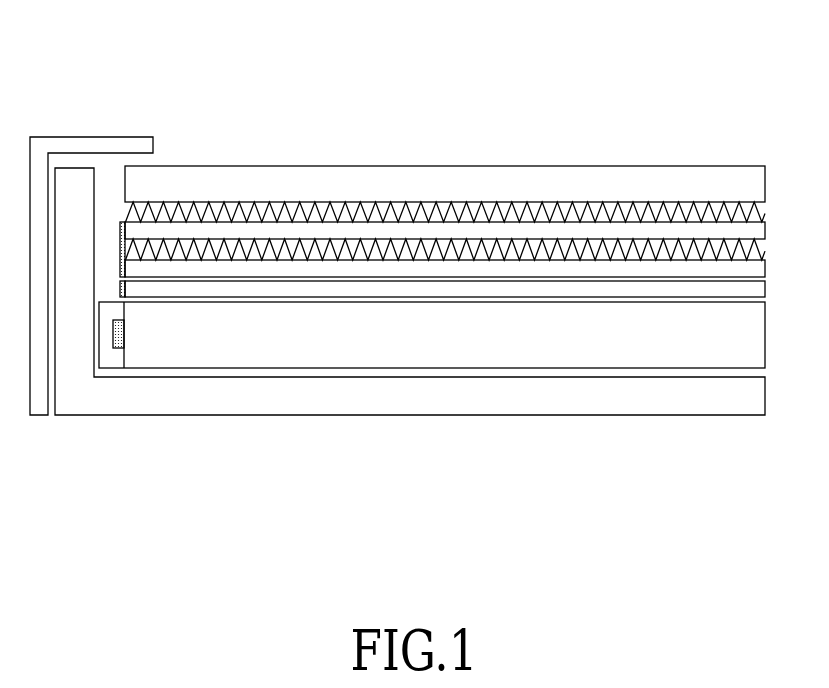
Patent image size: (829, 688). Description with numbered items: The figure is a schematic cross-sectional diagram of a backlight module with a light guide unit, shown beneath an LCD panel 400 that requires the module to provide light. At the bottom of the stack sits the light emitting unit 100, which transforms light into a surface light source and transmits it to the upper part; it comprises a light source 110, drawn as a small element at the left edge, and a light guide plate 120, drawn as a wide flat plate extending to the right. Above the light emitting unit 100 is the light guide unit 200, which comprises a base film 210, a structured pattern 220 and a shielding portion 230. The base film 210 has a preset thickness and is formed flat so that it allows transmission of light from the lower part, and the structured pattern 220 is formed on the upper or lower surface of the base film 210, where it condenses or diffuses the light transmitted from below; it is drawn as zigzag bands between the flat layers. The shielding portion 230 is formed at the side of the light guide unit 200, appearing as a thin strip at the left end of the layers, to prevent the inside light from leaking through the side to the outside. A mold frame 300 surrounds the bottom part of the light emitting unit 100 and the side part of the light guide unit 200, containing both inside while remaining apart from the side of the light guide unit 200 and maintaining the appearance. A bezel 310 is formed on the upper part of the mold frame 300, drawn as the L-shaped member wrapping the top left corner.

The light emitting unit 100 is at (87, 483).
The light source 110 is at (113, 346).
The light guide plate 120 is at (188, 353).
The light guide unit 200 is at (148, 56).
The base film 210 is at (237, 232).
The structured pattern 220 is at (176, 205).
The shielding portion 230 is at (122, 227).
The mold frame 300 is at (78, 182).
The bezel 310 is at (110, 147).
The LCD panel 400 is at (561, 182).